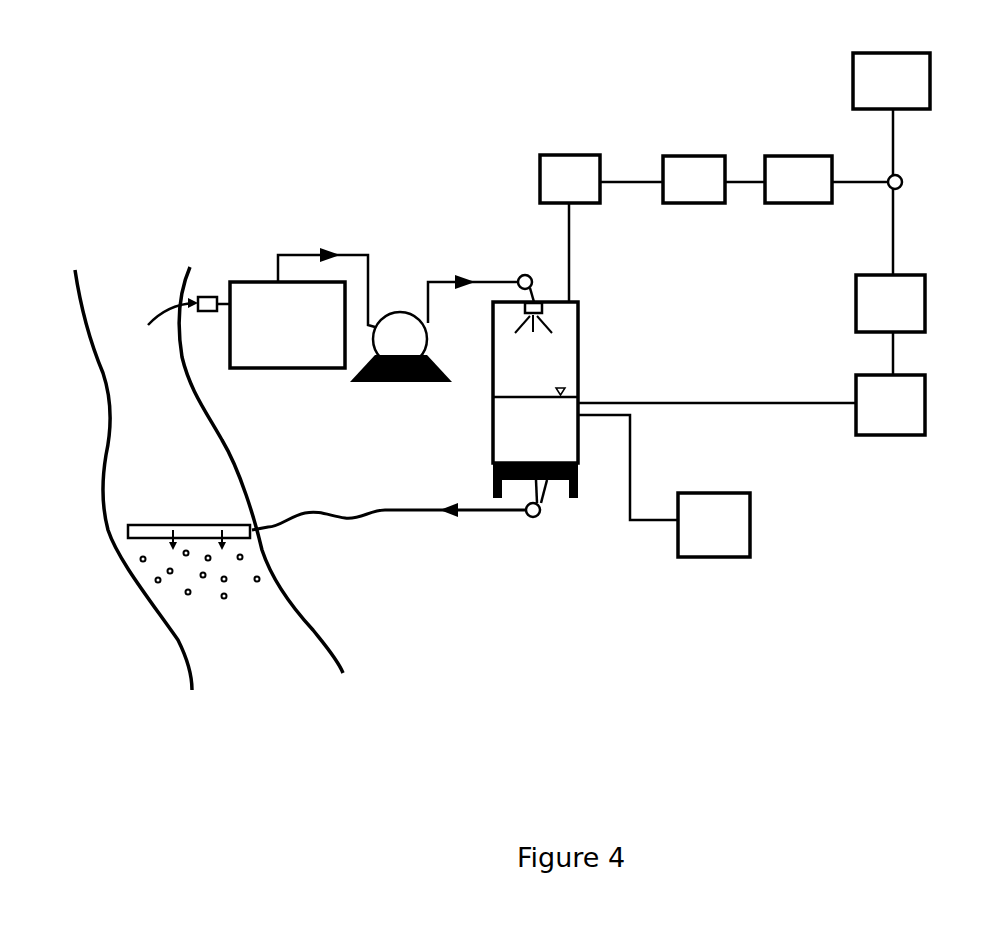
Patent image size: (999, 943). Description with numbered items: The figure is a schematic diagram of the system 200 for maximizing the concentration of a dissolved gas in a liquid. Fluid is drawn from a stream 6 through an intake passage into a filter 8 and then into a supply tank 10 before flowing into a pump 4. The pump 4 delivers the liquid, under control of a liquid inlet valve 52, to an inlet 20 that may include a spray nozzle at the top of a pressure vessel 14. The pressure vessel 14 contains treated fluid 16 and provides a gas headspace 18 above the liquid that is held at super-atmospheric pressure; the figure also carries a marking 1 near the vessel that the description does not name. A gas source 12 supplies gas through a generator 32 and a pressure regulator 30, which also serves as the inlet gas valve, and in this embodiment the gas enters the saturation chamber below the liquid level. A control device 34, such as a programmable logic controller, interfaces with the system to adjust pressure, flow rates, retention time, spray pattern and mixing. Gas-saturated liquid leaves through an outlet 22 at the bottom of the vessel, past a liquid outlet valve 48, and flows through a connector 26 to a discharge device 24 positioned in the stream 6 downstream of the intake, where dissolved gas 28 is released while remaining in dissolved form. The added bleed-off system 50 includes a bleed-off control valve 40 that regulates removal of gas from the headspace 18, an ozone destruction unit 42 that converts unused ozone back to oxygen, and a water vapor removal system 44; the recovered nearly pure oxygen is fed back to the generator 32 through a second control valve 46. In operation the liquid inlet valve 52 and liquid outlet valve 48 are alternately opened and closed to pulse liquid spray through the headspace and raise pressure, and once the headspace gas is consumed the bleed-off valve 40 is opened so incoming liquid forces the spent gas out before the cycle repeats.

The system for maximizing the concentration of a dissolved gas in a liquid 200 is at (470, 176).
The treatment unit 1 is at (601, 352).
The pump 4 is at (403, 392).
The stream 6 is at (165, 458).
The filter 8 is at (210, 290).
The supply tank 10 is at (295, 338).
The gas source 12 is at (891, 81).
The pressure vessel 14 is at (488, 400).
The treated fluid 16 is at (543, 450).
The gas headspace 18 is at (543, 380).
The inlet 20 is at (537, 303).
The outlet 22 is at (548, 483).
The discharge device 24 is at (190, 528).
The connector 26 is at (356, 521).
The dissolved gas 28 is at (257, 582).
The pressure regulator 30 is at (751, 405).
The generator 32 is at (890, 325).
The control device 34 is at (664, 486).
The bleed-off control valve 40 is at (570, 179).
The ozone destruction unit 42 is at (694, 179).
The water vapor removal system 44 is at (798, 179).
The second control valve 46 is at (905, 177).
The liquid outlet valve 48 is at (528, 516).
The bleed-off system 50 is at (843, 128).
The liquid inlet valve 52 is at (519, 278).